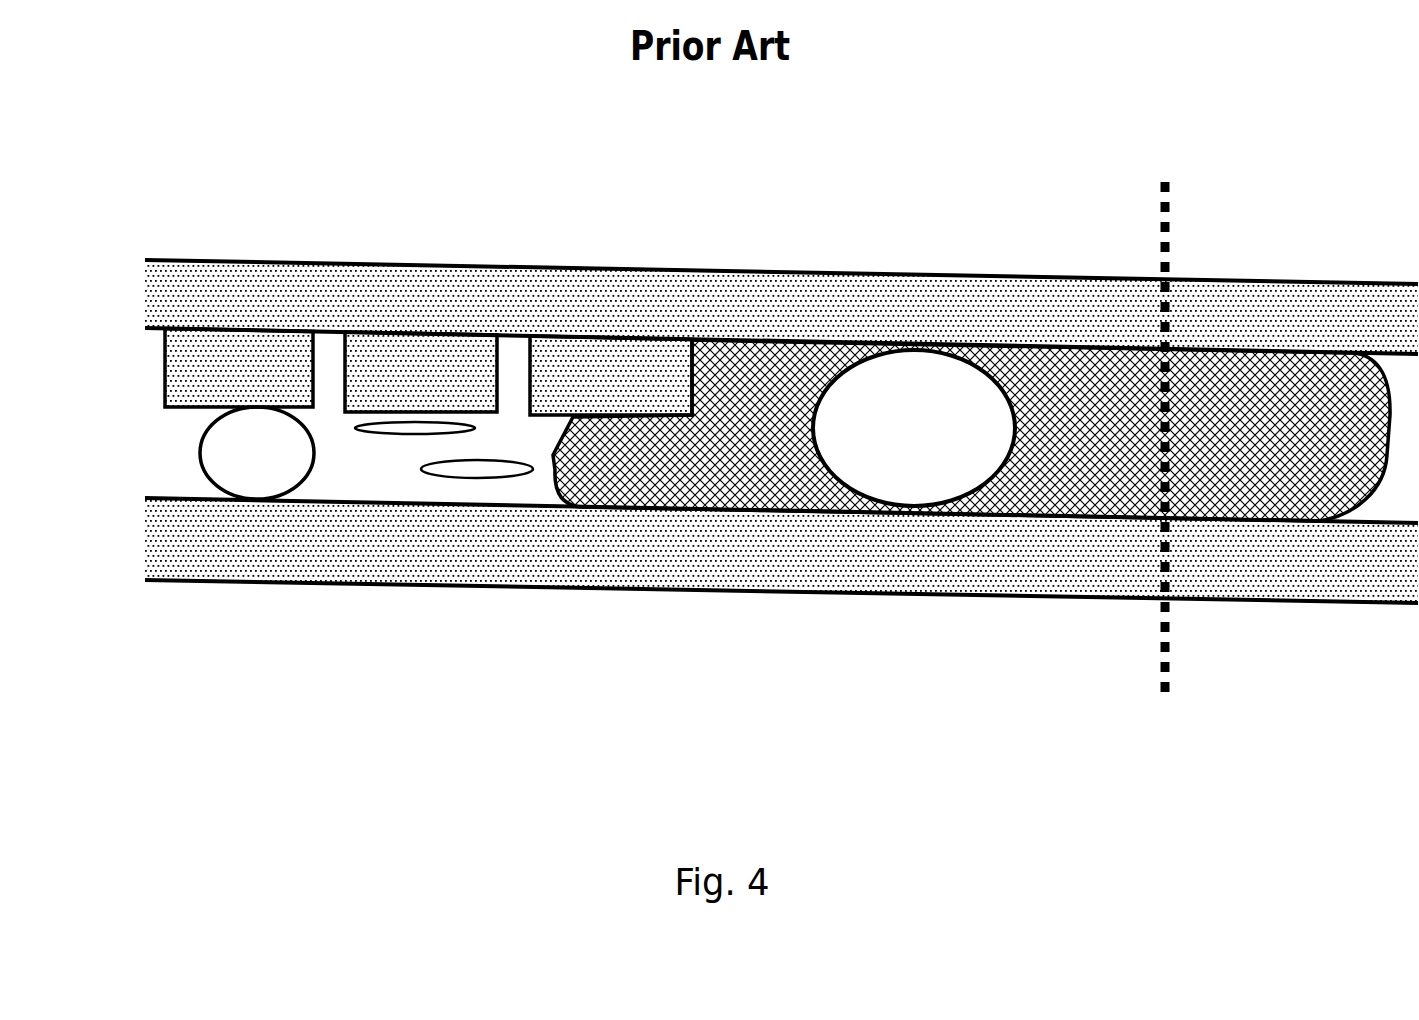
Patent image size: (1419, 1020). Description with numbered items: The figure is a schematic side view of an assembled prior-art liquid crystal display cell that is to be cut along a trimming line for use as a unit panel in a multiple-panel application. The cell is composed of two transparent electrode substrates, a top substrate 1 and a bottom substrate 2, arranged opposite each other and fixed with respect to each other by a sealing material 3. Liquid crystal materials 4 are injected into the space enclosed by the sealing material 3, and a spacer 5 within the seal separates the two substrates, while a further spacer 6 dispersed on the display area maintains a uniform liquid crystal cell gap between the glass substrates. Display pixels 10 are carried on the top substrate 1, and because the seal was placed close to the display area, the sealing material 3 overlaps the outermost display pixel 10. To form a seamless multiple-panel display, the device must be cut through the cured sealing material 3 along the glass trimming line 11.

The top substrate 1 is at (695, 298).
The bottom substrate 2 is at (755, 553).
The sealing material 3 is at (1060, 470).
The liquid crystal materials 4 is at (470, 480).
The spacer 5 is at (965, 415).
The spacer 6 is at (265, 457).
The display pixel 10 is at (443, 360).
The glass trimming line 11 is at (1170, 412).